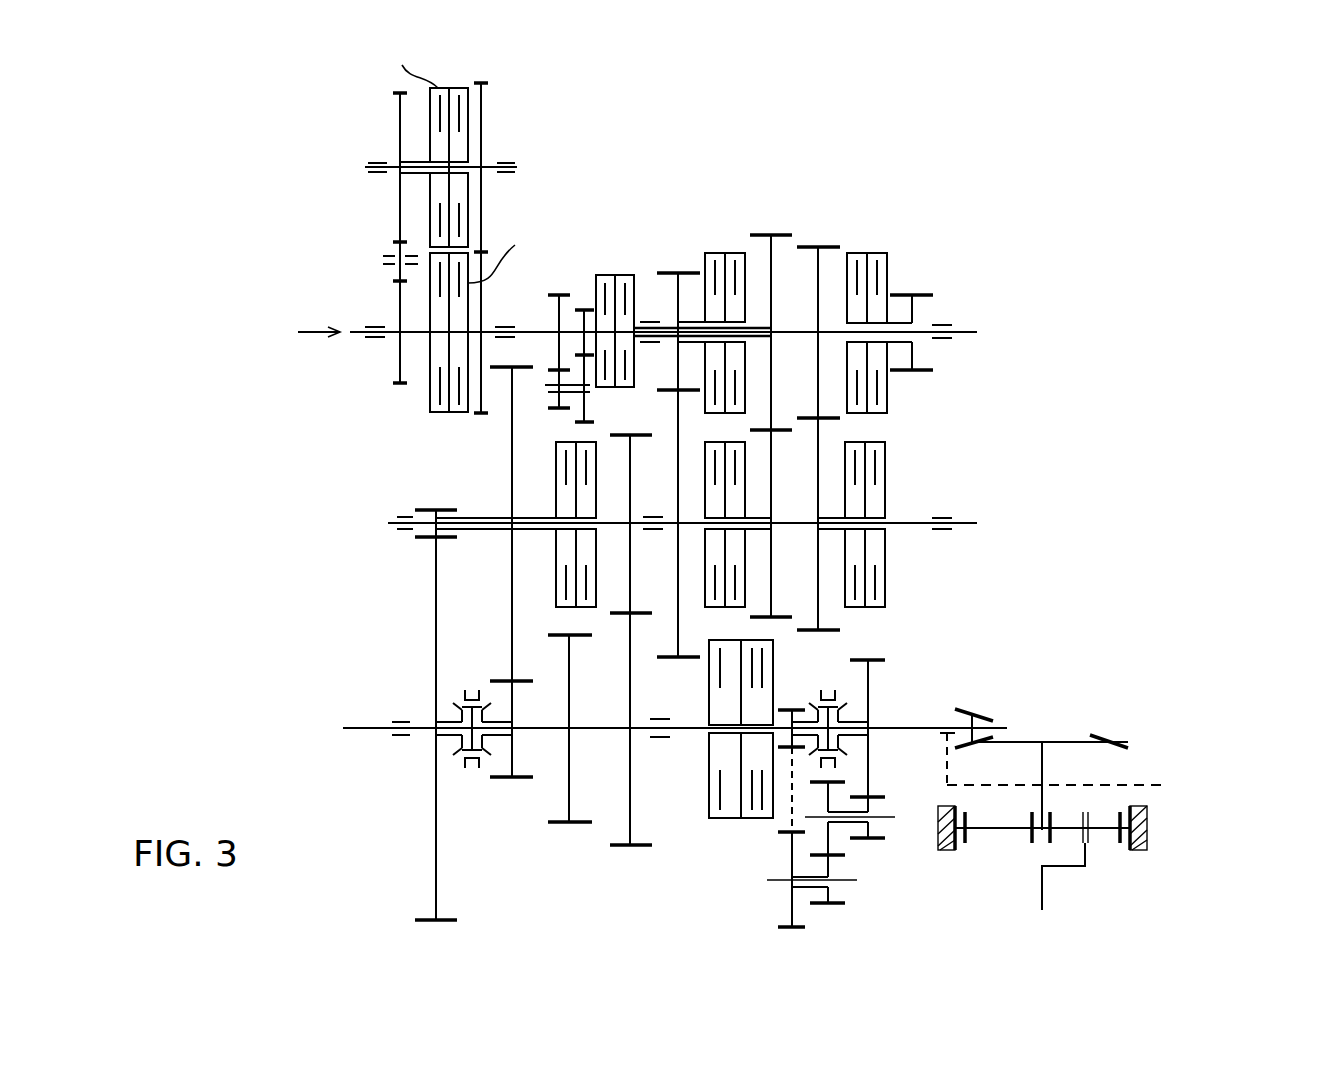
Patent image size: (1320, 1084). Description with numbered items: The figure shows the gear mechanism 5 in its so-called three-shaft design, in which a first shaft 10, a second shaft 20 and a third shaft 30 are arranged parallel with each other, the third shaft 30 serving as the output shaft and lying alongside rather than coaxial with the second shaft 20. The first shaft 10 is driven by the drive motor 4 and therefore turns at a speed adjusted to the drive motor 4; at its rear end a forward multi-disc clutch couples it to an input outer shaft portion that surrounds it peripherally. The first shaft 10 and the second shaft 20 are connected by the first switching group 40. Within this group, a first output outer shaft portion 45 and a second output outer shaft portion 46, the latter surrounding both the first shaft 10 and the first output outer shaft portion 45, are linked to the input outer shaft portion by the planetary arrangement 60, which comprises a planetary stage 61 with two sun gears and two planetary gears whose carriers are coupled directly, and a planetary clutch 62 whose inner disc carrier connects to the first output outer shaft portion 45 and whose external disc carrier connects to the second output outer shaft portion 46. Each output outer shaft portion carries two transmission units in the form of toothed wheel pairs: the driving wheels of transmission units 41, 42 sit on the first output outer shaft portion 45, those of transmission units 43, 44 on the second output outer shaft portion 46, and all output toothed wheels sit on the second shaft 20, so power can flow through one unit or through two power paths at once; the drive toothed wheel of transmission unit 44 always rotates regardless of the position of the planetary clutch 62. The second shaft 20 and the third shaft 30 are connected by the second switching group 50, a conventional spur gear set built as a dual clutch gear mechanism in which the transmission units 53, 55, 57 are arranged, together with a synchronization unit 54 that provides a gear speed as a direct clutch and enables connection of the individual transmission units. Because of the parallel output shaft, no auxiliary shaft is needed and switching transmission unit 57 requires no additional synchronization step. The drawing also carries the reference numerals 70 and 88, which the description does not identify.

The drive motor 4 is at (312, 332).
The gear mechanism 5 is at (1171, 235).
The first shaft 10 is at (393, 338).
The second shaft 20 is at (905, 522).
The third shaft 30 is at (362, 730).
The first switching group 40 is at (856, 183).
The transmission unit 41 is at (915, 295).
The transmission unit 42 is at (818, 247).
The transmission unit 43 is at (682, 273).
The transmission unit 44 is at (765, 235).
The first output outer shaft portion 45 is at (920, 330).
The second output outer shaft portion 46 is at (650, 320).
The second switching group 50 is at (822, 697).
The transmission unit 53 is at (430, 922).
The synchronization unit 54 is at (624, 847).
The transmission unit 55 is at (497, 778).
The transmission unit 57 is at (873, 838).
The planetary arrangement 60 is at (544, 198).
The planetary stage 61 is at (540, 322).
The planetary clutch 62 is at (615, 265).
The reverse clutch unit 70 is at (316, 114).
The synchronizer 88 is at (465, 698).